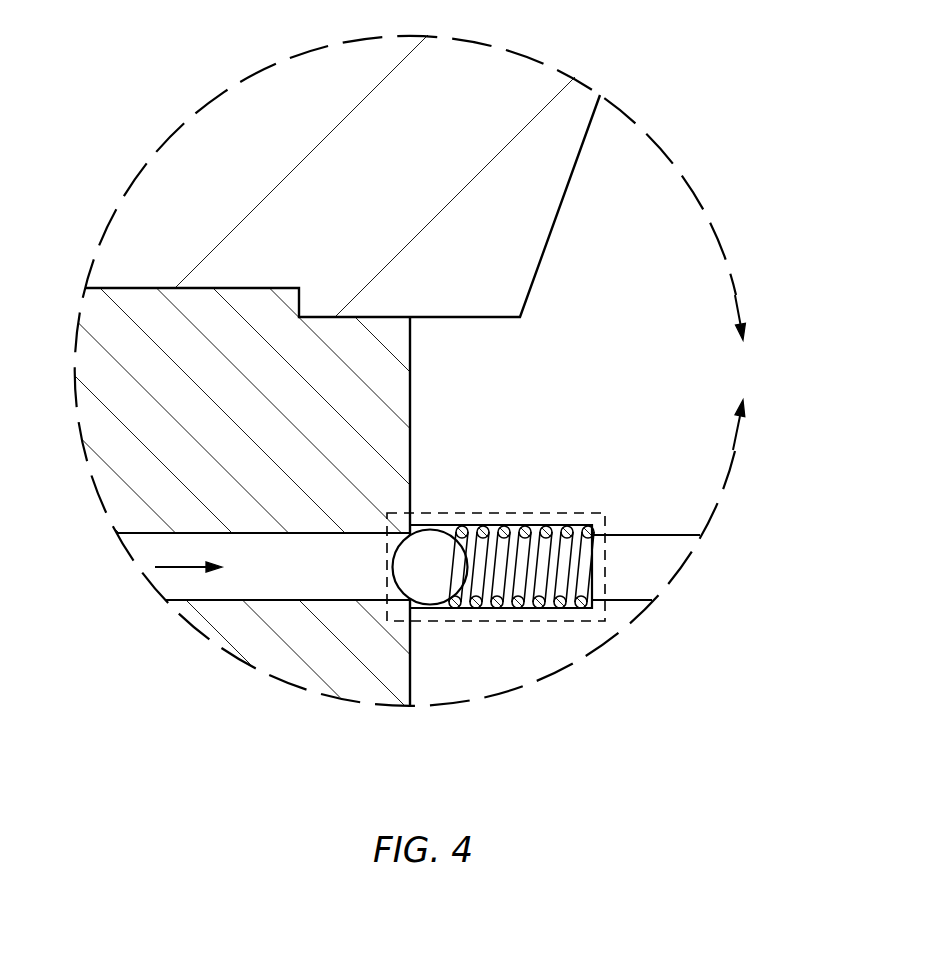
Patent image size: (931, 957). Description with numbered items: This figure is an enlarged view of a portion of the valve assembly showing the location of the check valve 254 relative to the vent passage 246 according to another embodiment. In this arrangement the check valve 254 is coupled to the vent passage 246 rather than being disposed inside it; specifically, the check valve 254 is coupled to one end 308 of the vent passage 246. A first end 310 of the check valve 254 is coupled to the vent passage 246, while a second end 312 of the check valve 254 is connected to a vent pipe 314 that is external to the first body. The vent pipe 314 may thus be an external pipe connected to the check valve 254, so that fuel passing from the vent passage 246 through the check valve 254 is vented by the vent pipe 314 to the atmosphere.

The vent passage 246 is at (170, 577).
The check valve 254 is at (485, 622).
The end of the vent passage 308 is at (412, 435).
The first end of the check valve 310 is at (408, 607).
The second end of the check valve 312 is at (593, 605).
The vent pipe 314 is at (668, 543).